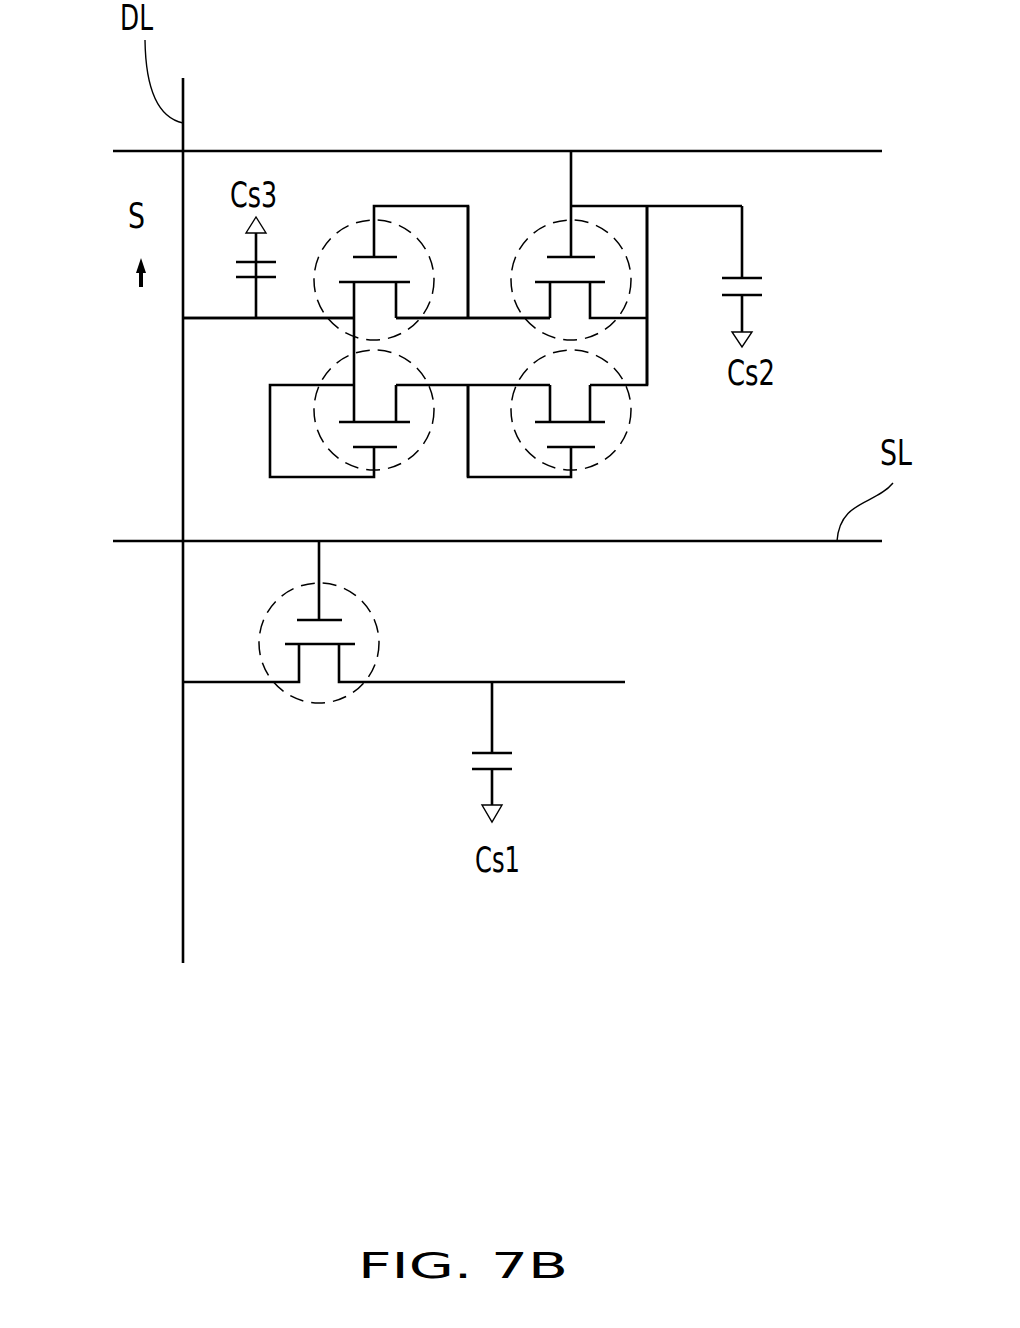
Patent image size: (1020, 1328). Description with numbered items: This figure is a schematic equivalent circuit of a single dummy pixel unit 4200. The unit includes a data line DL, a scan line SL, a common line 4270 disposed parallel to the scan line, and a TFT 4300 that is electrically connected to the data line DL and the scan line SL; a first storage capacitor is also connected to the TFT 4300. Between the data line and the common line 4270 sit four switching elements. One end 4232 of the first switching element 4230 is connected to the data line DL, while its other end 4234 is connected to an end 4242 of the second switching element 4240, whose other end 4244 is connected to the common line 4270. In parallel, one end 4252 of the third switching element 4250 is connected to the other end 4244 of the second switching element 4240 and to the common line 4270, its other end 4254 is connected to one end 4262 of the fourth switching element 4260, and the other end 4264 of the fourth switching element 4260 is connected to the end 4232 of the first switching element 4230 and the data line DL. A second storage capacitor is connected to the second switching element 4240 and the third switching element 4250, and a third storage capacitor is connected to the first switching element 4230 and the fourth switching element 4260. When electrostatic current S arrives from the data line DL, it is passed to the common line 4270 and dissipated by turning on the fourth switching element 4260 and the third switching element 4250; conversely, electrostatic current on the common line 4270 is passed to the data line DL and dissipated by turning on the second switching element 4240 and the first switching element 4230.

The dummy pixel unit 4200 is at (880, 1047).
The first switching element 4230 is at (357, 220).
The end of first switching element 4232 is at (292, 316).
The other end of first switching element 4234 is at (458, 298).
The second switching element 4240 is at (650, 258).
The end of second switching element 4242 is at (497, 316).
The other end of second switching element 4244 is at (573, 182).
The third switching element 4250 is at (620, 455).
The end of third switching element 4252 is at (647, 362).
The other end of third switching element 4254 is at (492, 387).
The fourth switching element 4260 is at (330, 465).
The end of fourth switching element 4262 is at (407, 385).
The other end of fourth switching element 4264 is at (352, 350).
The common line 4270 is at (787, 151).
The TFT 4300 is at (315, 705).